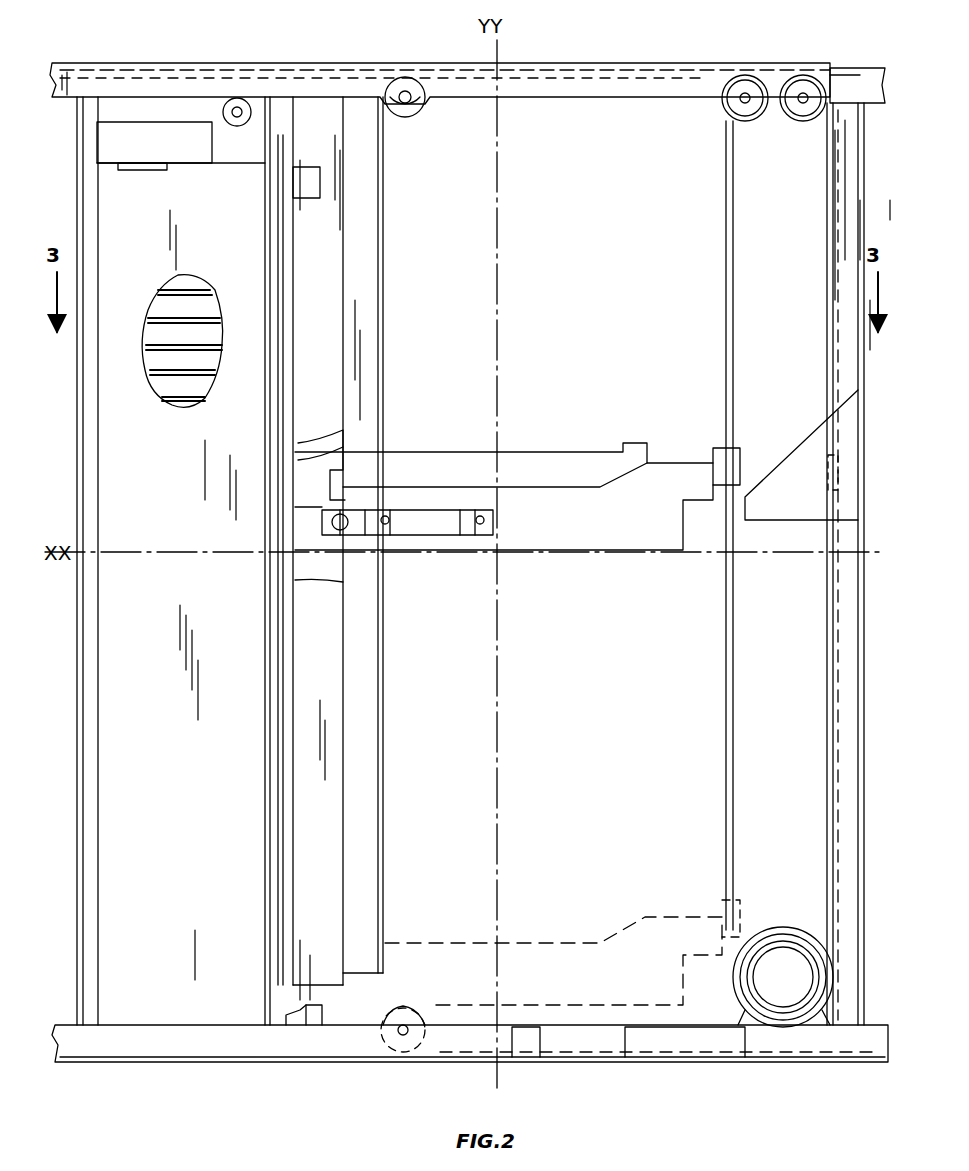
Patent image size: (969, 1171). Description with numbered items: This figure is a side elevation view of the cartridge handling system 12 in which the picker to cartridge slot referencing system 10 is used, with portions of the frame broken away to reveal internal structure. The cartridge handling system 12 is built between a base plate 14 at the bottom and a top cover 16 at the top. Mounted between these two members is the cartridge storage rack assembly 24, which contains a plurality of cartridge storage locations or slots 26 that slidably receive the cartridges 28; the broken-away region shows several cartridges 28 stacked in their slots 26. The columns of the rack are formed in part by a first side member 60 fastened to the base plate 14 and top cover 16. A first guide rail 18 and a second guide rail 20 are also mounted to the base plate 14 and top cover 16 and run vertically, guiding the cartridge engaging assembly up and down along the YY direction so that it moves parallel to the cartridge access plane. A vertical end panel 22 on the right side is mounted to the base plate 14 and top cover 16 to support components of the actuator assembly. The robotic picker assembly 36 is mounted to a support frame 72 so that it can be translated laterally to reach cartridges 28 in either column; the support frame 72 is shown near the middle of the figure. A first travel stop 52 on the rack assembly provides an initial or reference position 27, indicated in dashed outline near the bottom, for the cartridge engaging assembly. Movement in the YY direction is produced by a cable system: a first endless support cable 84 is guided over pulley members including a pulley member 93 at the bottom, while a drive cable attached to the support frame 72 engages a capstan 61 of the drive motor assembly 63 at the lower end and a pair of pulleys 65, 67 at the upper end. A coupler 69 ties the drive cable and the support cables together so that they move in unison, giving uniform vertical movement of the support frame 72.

The picker to cartridge slot referencing system 10 is at (190, 46).
The cartridge handling system 12 is at (356, 62).
The base plate 14 is at (238, 1063).
The top cover 16 is at (680, 62).
The first guide rail 18 is at (345, 760).
The second guide rail 20 is at (343, 455).
The vertical end panel 22 is at (858, 640).
The cartridge storage rack assembly 24 is at (68, 640).
The cartridge storage locations or slots 26 is at (213, 314).
The initial or reference position 27 is at (530, 943).
The cartridges 28 is at (160, 312).
The robotic picker assembly 36 is at (508, 452).
The first travel stop 52 is at (320, 1010).
The first side member 60 is at (75, 703).
The capstan 61 is at (770, 928).
The drive motor assembly 63 is at (752, 975).
The pulley 65 is at (722, 107).
The pulley 67 is at (795, 122).
The coupler 69 is at (822, 458).
The support frame 72 is at (552, 534).
The first endless support cable 84 is at (585, 1042).
The pulley member 93 is at (420, 1012).